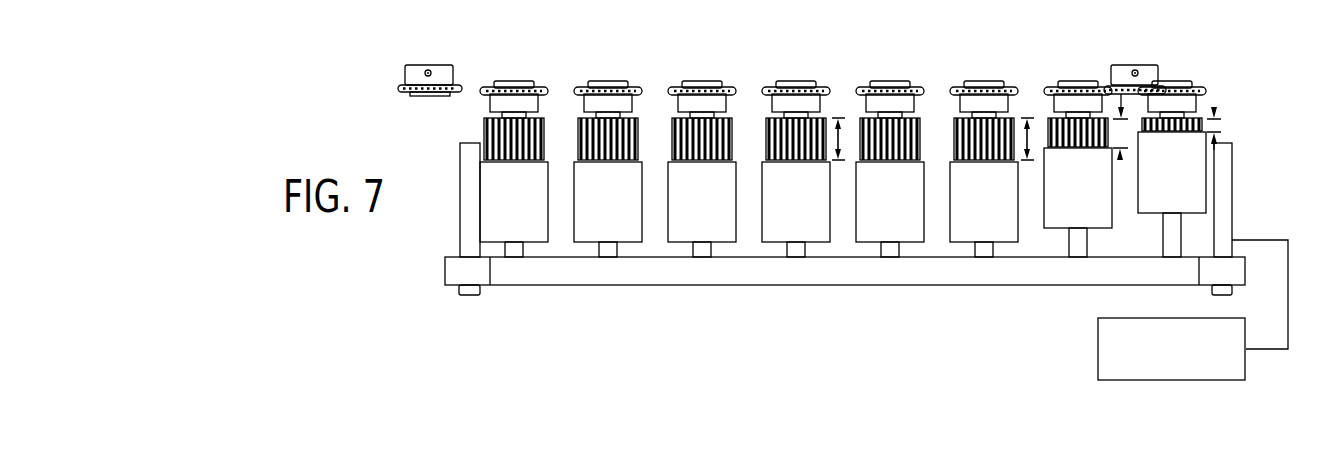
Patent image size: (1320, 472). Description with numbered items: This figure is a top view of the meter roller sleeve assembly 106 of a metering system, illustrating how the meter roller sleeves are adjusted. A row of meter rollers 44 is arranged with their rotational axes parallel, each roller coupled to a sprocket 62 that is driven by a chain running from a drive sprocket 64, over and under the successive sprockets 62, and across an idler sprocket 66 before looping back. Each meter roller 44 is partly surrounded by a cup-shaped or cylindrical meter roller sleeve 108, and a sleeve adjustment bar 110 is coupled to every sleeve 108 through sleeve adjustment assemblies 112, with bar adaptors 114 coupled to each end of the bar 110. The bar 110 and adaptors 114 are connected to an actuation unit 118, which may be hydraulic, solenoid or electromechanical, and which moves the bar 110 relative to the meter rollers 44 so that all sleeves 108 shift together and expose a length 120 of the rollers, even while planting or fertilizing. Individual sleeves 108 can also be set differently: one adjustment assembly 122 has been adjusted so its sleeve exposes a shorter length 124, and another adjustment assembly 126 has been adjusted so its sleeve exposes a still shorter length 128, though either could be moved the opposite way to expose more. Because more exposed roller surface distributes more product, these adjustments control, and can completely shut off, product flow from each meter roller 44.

The meter roller sleeve assembly 106 is at (368, 38).
The idler sprocket 66 is at (415, 72).
The drive sprocket 64 is at (1137, 64).
The sprocket 62 is at (605, 82).
The meter roller sleeve 108 is at (531, 214).
The meter roller 44 is at (579, 148).
The length 120 is at (838, 138).
The length 124 is at (1120, 159).
The length 128 is at (1214, 108).
The bar adaptor 114 is at (468, 202).
The sleeve adjustment bar 110 is at (513, 272).
The sleeve adjustment assembly 112 is at (514, 255).
The adjustment assembly 122 is at (1077, 252).
The adjustment assembly 126 is at (1172, 252).
The actuation unit 118 is at (1098, 352).